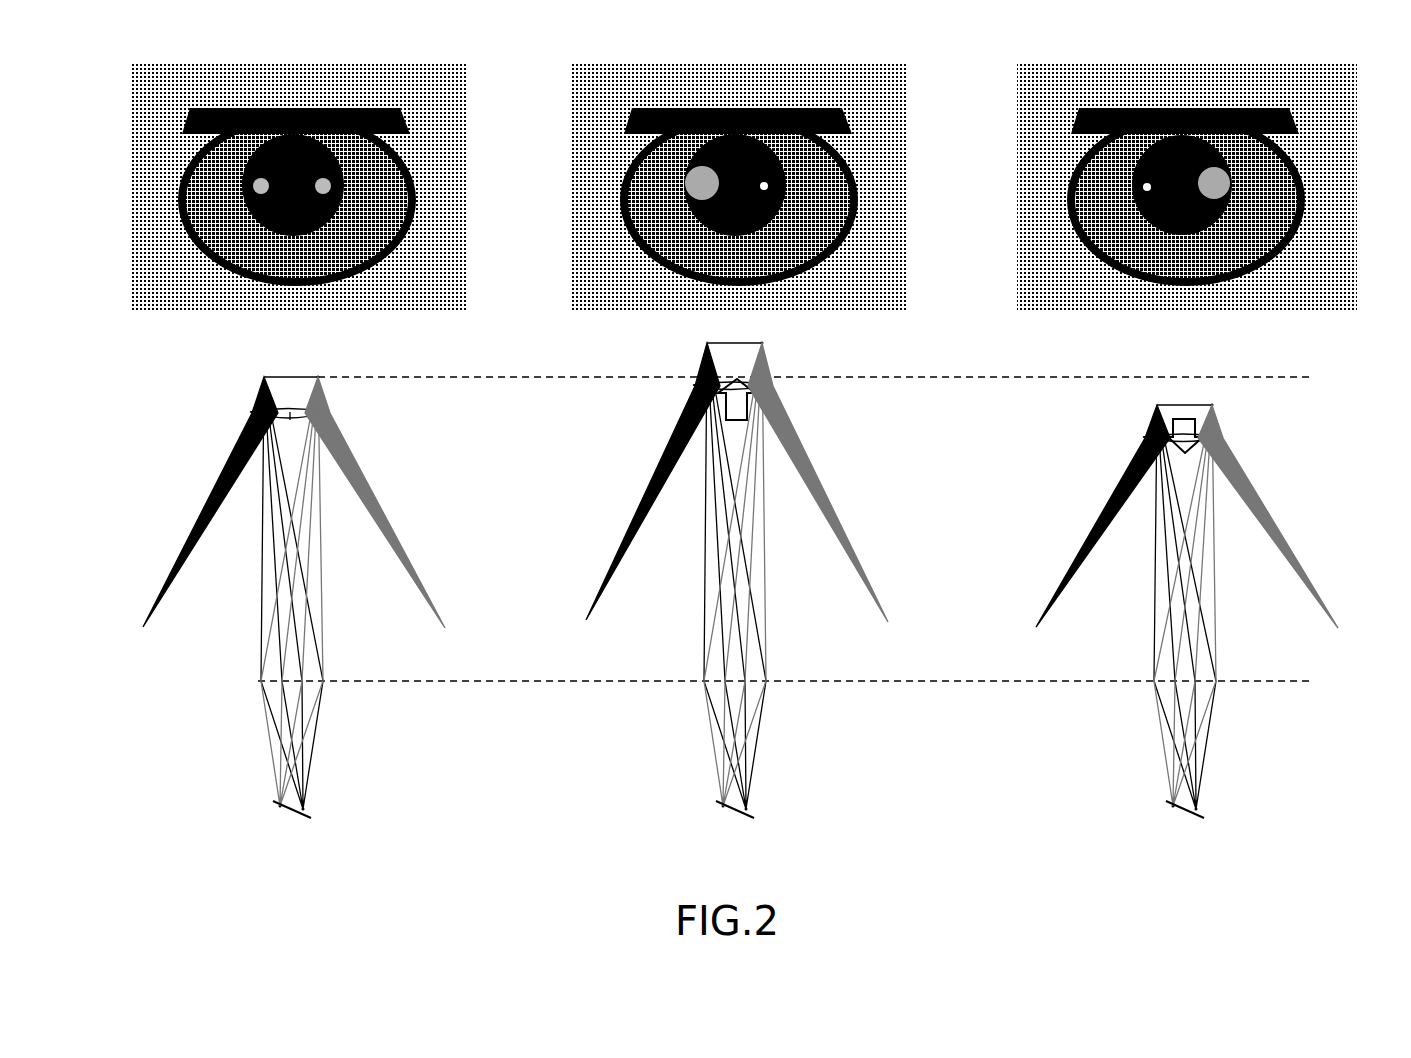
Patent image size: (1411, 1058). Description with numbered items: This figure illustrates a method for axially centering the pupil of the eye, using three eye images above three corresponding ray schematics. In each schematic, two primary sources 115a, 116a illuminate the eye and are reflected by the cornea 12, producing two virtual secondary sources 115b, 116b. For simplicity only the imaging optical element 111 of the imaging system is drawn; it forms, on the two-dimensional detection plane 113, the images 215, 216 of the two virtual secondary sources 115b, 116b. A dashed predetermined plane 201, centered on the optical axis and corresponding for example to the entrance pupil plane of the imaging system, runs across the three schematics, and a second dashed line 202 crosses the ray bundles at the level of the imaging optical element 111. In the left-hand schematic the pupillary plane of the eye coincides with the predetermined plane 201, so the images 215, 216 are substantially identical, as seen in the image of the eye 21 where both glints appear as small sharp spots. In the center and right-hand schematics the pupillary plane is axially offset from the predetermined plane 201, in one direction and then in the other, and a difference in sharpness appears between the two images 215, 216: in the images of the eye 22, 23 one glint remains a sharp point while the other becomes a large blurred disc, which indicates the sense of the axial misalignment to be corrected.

The image of the eye 21 is at (178, 45).
The image of the eye 22 is at (616, 45).
The image of the eye 23 is at (1063, 45).
The cornea 12 is at (327, 412).
The imaging optical element 111 is at (310, 680).
The two-dimensional detection plane 113 is at (313, 812).
The first primary source 115a is at (143, 627).
The first virtual secondary source 115b is at (264, 377).
The second primary source 116a is at (445, 628).
The second virtual secondary source 116b is at (318, 377).
The predetermined plane 201 is at (1312, 377).
The lens aperture plane reference line 202 is at (1312, 681).
The image of first virtual secondary source 215 is at (258, 187).
The image of second virtual secondary source 216 is at (257, 218).